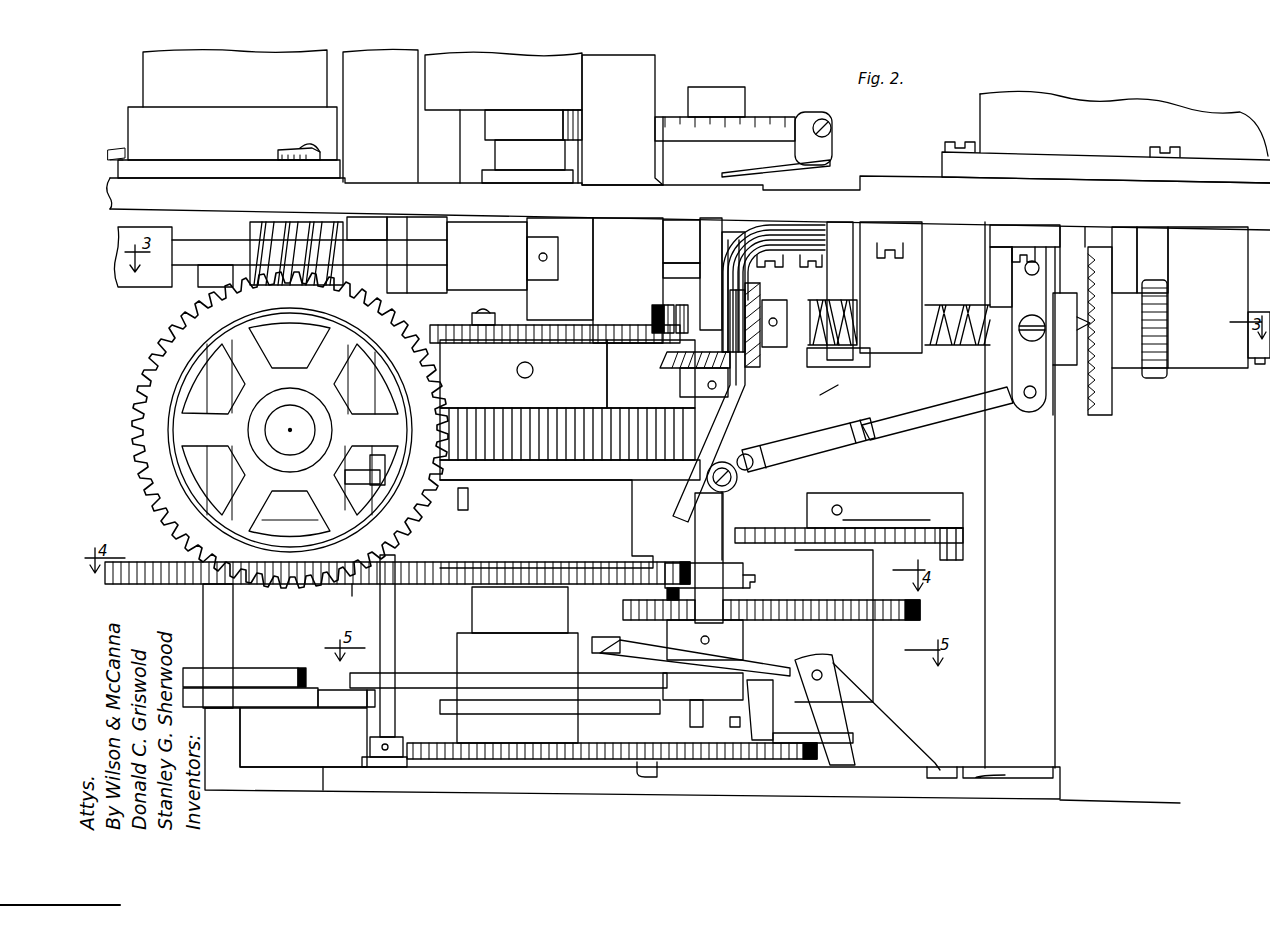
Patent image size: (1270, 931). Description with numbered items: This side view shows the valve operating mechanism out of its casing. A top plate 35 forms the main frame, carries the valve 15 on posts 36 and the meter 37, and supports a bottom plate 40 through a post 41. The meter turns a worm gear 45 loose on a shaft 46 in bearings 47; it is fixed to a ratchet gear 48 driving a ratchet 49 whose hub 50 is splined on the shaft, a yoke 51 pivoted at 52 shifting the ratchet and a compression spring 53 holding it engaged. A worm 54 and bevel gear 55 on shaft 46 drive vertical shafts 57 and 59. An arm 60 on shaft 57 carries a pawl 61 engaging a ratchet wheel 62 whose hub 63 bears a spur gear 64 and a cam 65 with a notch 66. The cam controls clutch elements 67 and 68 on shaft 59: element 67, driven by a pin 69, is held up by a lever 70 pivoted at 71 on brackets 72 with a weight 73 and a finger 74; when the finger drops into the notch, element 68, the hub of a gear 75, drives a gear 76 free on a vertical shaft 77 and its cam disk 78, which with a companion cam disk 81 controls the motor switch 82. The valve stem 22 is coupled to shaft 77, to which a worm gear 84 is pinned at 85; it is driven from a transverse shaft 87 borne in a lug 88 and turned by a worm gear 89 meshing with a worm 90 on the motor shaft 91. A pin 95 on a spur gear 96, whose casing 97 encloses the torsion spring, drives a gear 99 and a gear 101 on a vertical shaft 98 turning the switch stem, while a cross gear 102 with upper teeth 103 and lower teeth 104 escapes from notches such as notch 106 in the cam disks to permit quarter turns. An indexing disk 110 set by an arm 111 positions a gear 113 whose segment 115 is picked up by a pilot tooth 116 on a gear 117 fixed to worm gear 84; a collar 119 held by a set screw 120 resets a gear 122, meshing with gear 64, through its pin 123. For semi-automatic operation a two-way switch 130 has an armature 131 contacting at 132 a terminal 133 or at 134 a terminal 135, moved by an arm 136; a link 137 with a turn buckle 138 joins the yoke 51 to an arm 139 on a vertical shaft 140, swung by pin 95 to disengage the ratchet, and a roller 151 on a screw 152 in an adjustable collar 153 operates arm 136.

The valve 15 is at (552, 83).
The stem 22 is at (490, 120).
The top plate 35 is at (842, 192).
The posts 36 is at (655, 70).
The meter 37 is at (1092, 110).
The bottom plate 40 is at (768, 793).
The post 41 is at (1043, 520).
The worm gear 45 is at (1155, 380).
The shaft 46 is at (803, 330).
The bearings 47 is at (893, 348).
The ratchet gear 48 is at (1107, 400).
The ratchet 49 is at (1072, 375).
The hub 50 is at (998, 300).
The yoke 51 is at (1010, 365).
The pivot 52 is at (1040, 265).
The coiled compression spring 53 is at (938, 305).
The worm 54 is at (848, 305).
The bevel gear 55 is at (760, 368).
The vertical shaft 57 is at (832, 404).
The vertical shaft 59 is at (695, 530).
The arm 60 is at (898, 506).
The pawl 61 is at (965, 540).
The ratchet wheel 62 is at (750, 530).
The hub 63 is at (878, 560).
The spur gear 64 is at (922, 610).
The peripheral cam 65 is at (840, 740).
The notch 66 is at (812, 715).
The clutch element 67 is at (703, 686).
The clutch element 68 is at (708, 722).
The pin 69 is at (710, 641).
The lever 70 is at (635, 665).
The pivot 71 is at (825, 672).
The brackets 72 is at (880, 712).
The weight 73 is at (600, 637).
The finger 74 is at (750, 728).
The gear 75 is at (650, 777).
The gear 76 is at (525, 746).
The vertical shaft 77 is at (552, 157).
The cam disk 78 is at (475, 704).
The cam disk 81 is at (510, 678).
The switch 82 is at (162, 82).
The worm gear 84 is at (507, 415).
The pin 85 is at (535, 366).
The transverse shaft 87 is at (289, 418).
The lug 88 is at (242, 392).
The worm gear 89 is at (147, 478).
The worm 90 is at (295, 222).
The shaft 91 is at (417, 258).
The pin 95 is at (470, 494).
The spur gear 96 is at (522, 584).
The casing 97 is at (595, 520).
The vertical shaft 98 is at (235, 600).
The gear 99 is at (355, 586).
The gear 101 is at (160, 584).
The cross gear 102 is at (218, 672).
The upper tooth 103 is at (298, 668).
The lower tooth 104 is at (346, 702).
The notch 106 is at (462, 672).
The indexing disk 110 is at (752, 117).
The arm 111 is at (785, 166).
The gear 113 is at (662, 310).
The segmental tooth 115 is at (650, 315).
The pilot tooth 116 is at (497, 318).
The gear 117 is at (601, 345).
The collar 119 is at (730, 572).
The set screw 120 is at (752, 588).
The gear 122 is at (626, 610).
The pin 123 is at (672, 600).
The two-way switch 130 is at (728, 245).
The armature 131 is at (760, 312).
The contact 132 is at (730, 303).
The terminal 133 is at (728, 270).
The contact 134 is at (745, 392).
The terminal 135 is at (725, 335).
The arm 136 is at (735, 432).
The link 137 is at (918, 430).
The turn buckle 138 is at (840, 440).
The arm 139 is at (370, 482).
The vertical shaft 140 is at (398, 600).
The roller 151 is at (740, 482).
The screw 152 is at (722, 505).
The collar 153 is at (720, 440).